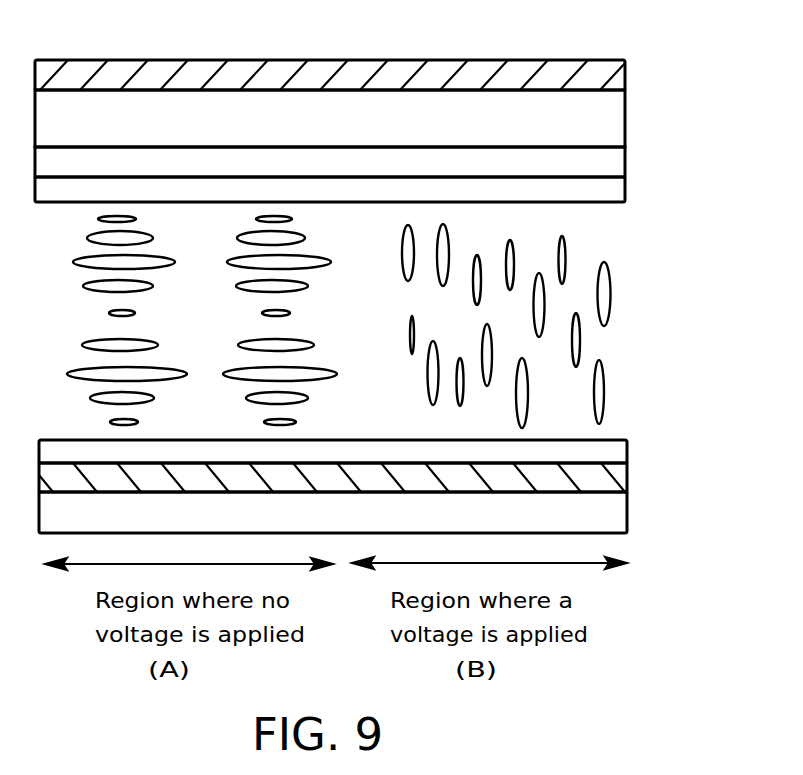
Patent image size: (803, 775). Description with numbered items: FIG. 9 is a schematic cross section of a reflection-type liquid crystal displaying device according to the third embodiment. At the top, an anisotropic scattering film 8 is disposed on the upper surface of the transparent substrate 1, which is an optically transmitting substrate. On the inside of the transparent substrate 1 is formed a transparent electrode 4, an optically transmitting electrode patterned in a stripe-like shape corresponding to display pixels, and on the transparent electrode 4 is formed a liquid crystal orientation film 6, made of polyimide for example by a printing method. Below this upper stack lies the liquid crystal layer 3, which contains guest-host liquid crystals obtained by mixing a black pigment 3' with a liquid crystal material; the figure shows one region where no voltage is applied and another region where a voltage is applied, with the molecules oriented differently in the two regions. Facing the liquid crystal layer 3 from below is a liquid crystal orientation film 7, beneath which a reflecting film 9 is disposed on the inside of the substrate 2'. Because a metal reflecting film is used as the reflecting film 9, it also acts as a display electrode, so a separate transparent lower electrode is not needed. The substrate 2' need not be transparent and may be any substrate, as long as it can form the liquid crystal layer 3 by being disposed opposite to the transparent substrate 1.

The anisotropic scattering film 8 is at (334, 79).
The transparent substrate 1 is at (352, 118).
The transparent electrode 4 is at (352, 163).
The liquid crystal orientation film 6 is at (352, 193).
The liquid crystal layer 3 is at (369, 322).
The black pigment 3' is at (624, 340).
The liquid crystal orientation film 7 is at (353, 452).
The reflecting film 9 is at (348, 478).
The substrate 2' is at (355, 512).